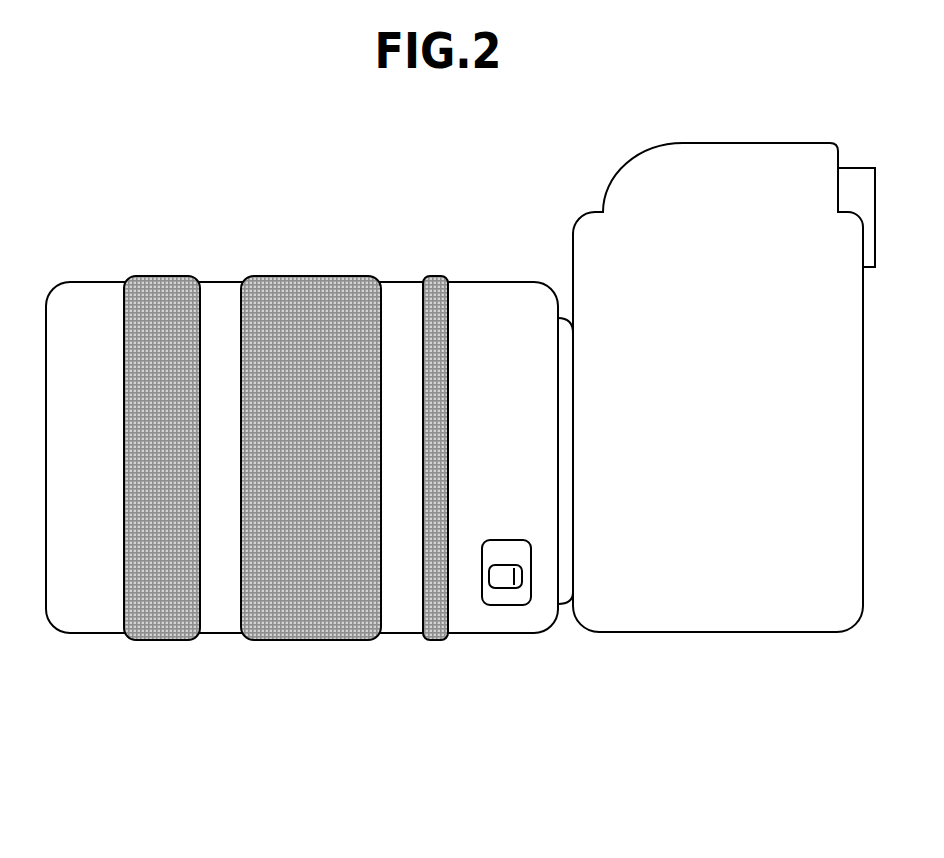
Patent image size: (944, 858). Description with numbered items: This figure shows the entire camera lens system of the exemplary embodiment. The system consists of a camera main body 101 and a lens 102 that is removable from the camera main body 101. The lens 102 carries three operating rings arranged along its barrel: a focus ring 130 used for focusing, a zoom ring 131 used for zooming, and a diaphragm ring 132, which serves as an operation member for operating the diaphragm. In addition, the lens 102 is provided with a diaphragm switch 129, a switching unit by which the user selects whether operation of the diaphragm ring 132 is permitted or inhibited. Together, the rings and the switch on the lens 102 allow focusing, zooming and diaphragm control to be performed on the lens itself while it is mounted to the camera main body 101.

The camera main body 101 is at (730, 623).
The lens 102 is at (87, 623).
The diaphragm switch 129 is at (512, 598).
The focus ring 130 is at (162, 287).
The zoom ring 131 is at (310, 285).
The diaphragm ring 132 is at (433, 285).